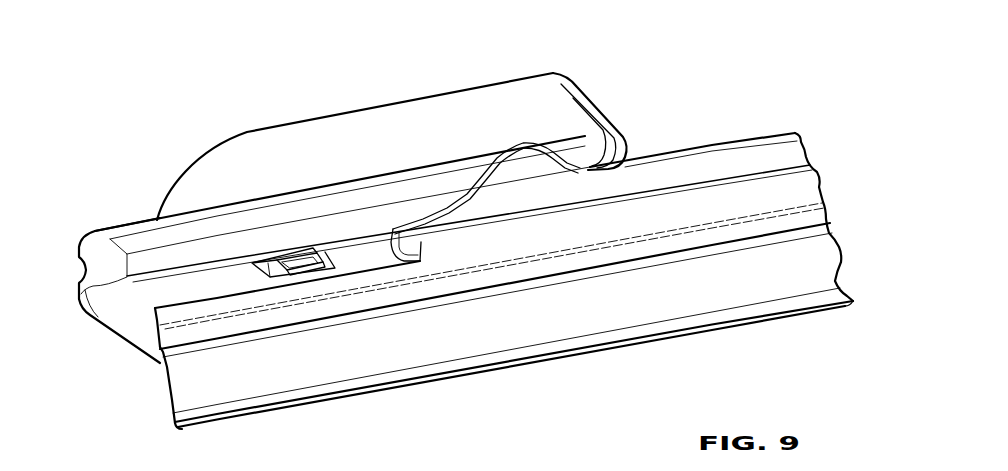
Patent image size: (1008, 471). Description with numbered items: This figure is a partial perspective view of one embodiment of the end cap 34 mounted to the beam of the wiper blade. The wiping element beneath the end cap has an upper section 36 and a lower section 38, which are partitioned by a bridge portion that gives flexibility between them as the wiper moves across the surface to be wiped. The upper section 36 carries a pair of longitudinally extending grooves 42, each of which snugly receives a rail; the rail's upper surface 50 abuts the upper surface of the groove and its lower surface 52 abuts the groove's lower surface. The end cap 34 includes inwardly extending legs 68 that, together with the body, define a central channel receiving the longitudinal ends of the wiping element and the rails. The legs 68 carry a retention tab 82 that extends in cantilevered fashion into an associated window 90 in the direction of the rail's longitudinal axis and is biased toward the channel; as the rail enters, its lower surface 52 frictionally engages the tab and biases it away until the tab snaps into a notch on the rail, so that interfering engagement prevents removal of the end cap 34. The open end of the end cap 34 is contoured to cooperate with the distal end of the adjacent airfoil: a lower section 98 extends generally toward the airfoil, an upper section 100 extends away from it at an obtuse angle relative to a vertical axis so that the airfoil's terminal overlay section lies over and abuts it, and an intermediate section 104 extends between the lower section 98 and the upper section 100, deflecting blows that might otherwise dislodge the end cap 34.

The end cap 34 is at (187, 160).
The upper section 36 is at (160, 312).
The lower section 38 is at (670, 333).
The grooves 42 is at (158, 345).
The upper surface 50 is at (753, 137).
The lower surface 52 is at (773, 157).
The inwardly extending legs 68 is at (373, 262).
The retention tab 82 is at (294, 258).
The windows 90 is at (266, 266).
The lower section 98 is at (500, 166).
The upper section 100 is at (563, 80).
The intermediate section 104 is at (625, 137).